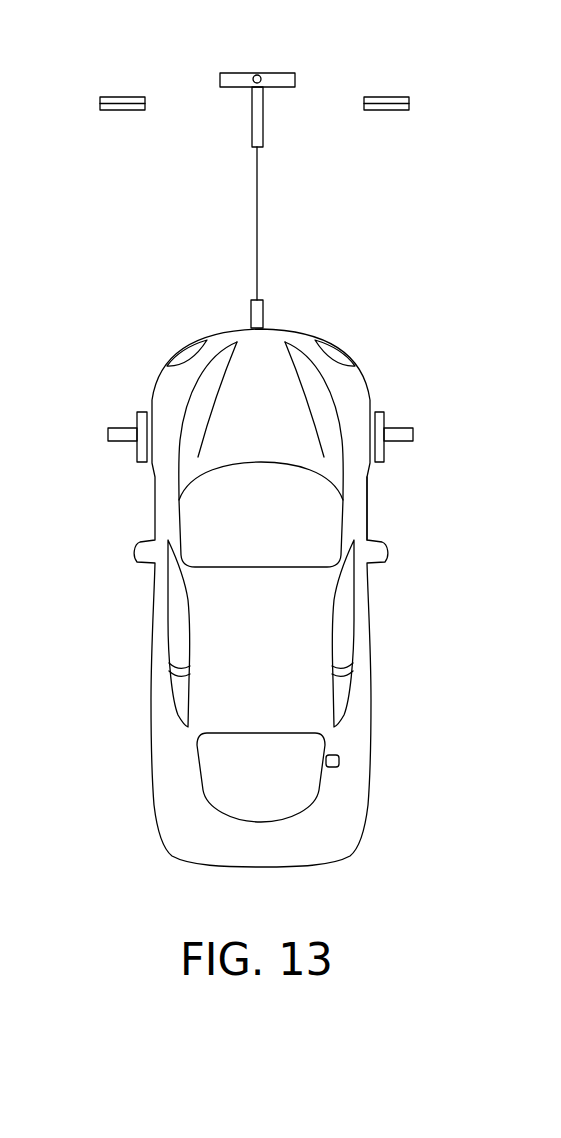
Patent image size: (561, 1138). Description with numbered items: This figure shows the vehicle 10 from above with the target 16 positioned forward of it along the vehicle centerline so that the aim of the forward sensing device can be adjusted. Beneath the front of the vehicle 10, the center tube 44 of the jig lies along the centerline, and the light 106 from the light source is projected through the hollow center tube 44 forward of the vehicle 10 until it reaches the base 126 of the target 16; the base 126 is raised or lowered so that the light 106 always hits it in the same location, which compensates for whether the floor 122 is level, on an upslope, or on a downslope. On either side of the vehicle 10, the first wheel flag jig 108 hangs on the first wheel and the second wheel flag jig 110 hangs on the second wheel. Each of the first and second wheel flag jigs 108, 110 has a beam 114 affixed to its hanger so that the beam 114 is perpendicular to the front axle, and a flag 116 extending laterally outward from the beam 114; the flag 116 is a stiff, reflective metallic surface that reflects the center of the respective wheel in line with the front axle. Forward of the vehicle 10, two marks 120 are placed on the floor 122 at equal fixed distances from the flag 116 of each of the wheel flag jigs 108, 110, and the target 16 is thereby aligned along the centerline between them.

The vehicle 10 is at (153, 663).
The target 16 is at (257, 75).
The center tube 44 is at (256, 315).
The light 106 is at (258, 218).
The first wheel flag jig 108 is at (257, 451).
The second wheel flag jig 110 is at (386, 470).
The beam 114 is at (142, 423).
The flag 116 is at (108, 433).
The marks 120 is at (120, 97).
The floor 122 is at (438, 191).
The base 126 is at (257, 125).